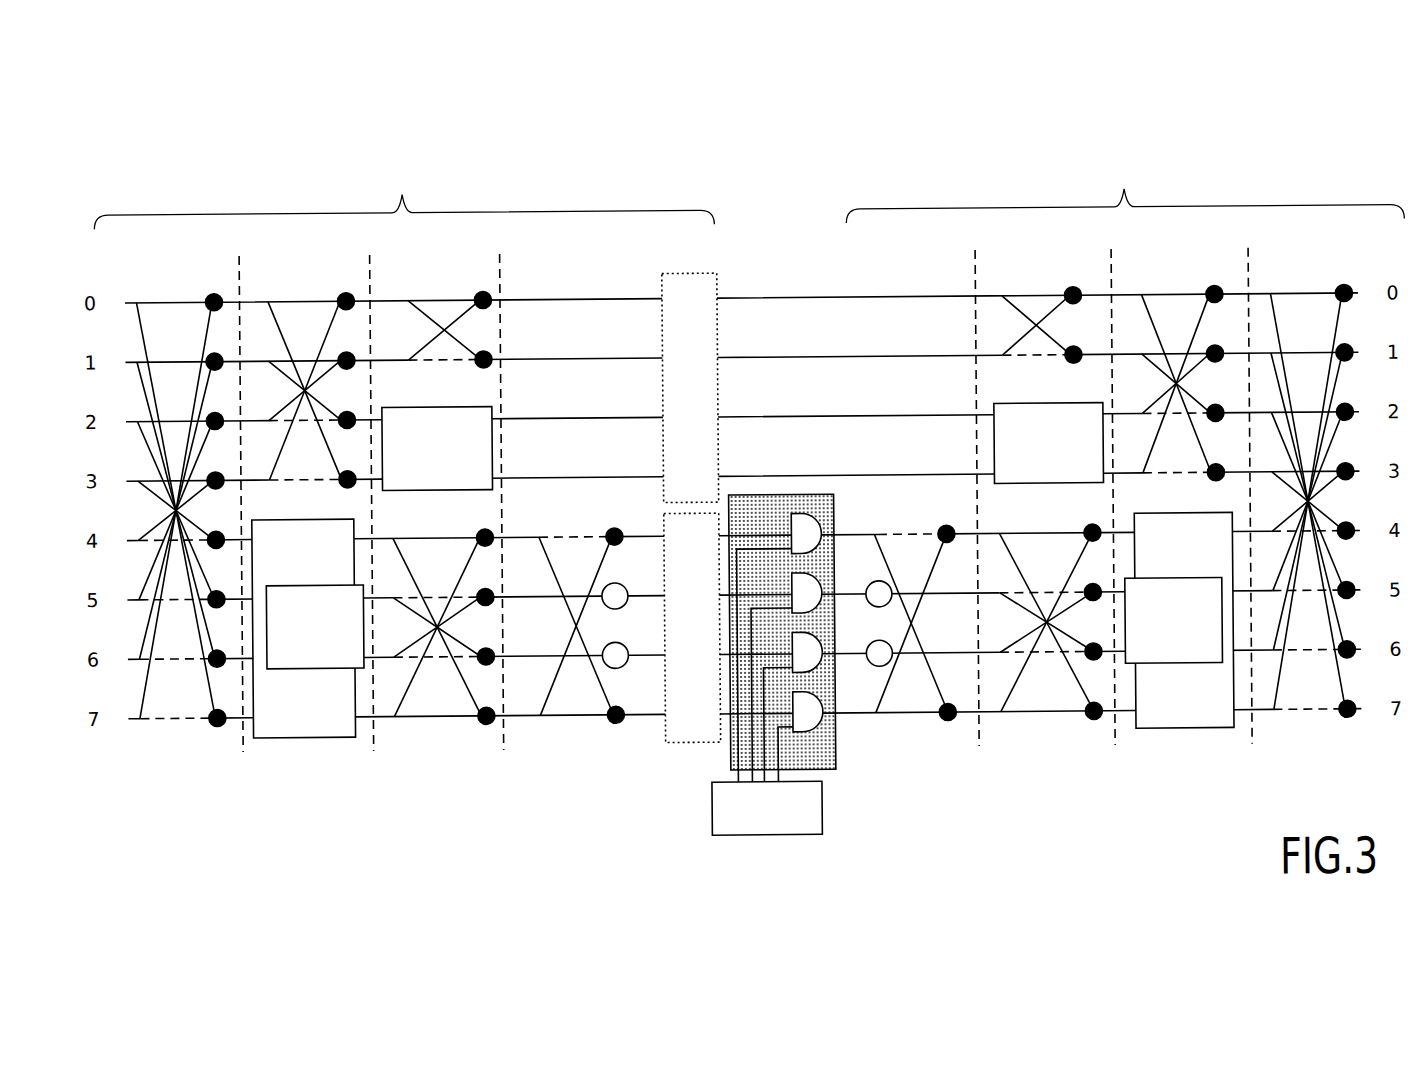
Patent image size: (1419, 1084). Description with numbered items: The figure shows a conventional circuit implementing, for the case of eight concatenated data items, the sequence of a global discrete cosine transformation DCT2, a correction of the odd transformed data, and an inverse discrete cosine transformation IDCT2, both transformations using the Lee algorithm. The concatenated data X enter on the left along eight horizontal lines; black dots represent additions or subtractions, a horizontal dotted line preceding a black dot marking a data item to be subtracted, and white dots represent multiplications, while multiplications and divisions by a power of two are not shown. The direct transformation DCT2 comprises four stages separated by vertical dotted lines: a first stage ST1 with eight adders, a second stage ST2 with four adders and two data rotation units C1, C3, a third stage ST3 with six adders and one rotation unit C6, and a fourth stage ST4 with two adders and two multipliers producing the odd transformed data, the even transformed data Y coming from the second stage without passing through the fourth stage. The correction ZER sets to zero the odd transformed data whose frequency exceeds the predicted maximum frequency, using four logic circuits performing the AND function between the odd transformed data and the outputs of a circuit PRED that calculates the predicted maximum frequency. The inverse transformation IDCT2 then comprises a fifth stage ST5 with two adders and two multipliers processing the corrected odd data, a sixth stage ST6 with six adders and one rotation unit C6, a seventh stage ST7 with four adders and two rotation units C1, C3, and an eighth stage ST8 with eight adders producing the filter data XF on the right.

The first stage ST1 is at (181, 484).
The second stage ST2 is at (312, 364).
The third stage ST3 is at (442, 482).
The fourth stage ST4 is at (582, 481).
The fifth stage ST5 is at (909, 478).
The sixth stage ST6 is at (1049, 477).
The seventh stage ST7 is at (1183, 358).
The eighth stage ST8 is at (1313, 475).
The data rotation unit C1 is at (744, 624).
The data rotation unit C3 is at (743, 625).
The rotation unit C6 is at (743, 446).
The concatenated data X is at (88, 255).
The transformed data Y is at (690, 490).
The filter data XF is at (1394, 244).
The direct discrete cosine transformation DCT2 is at (404, 191).
The inverse discrete cosine transformation IDCT2 is at (1125, 185).
The correction ZER is at (834, 768).
The circuit calculating a predicted maximum frequency PRED is at (767, 808).